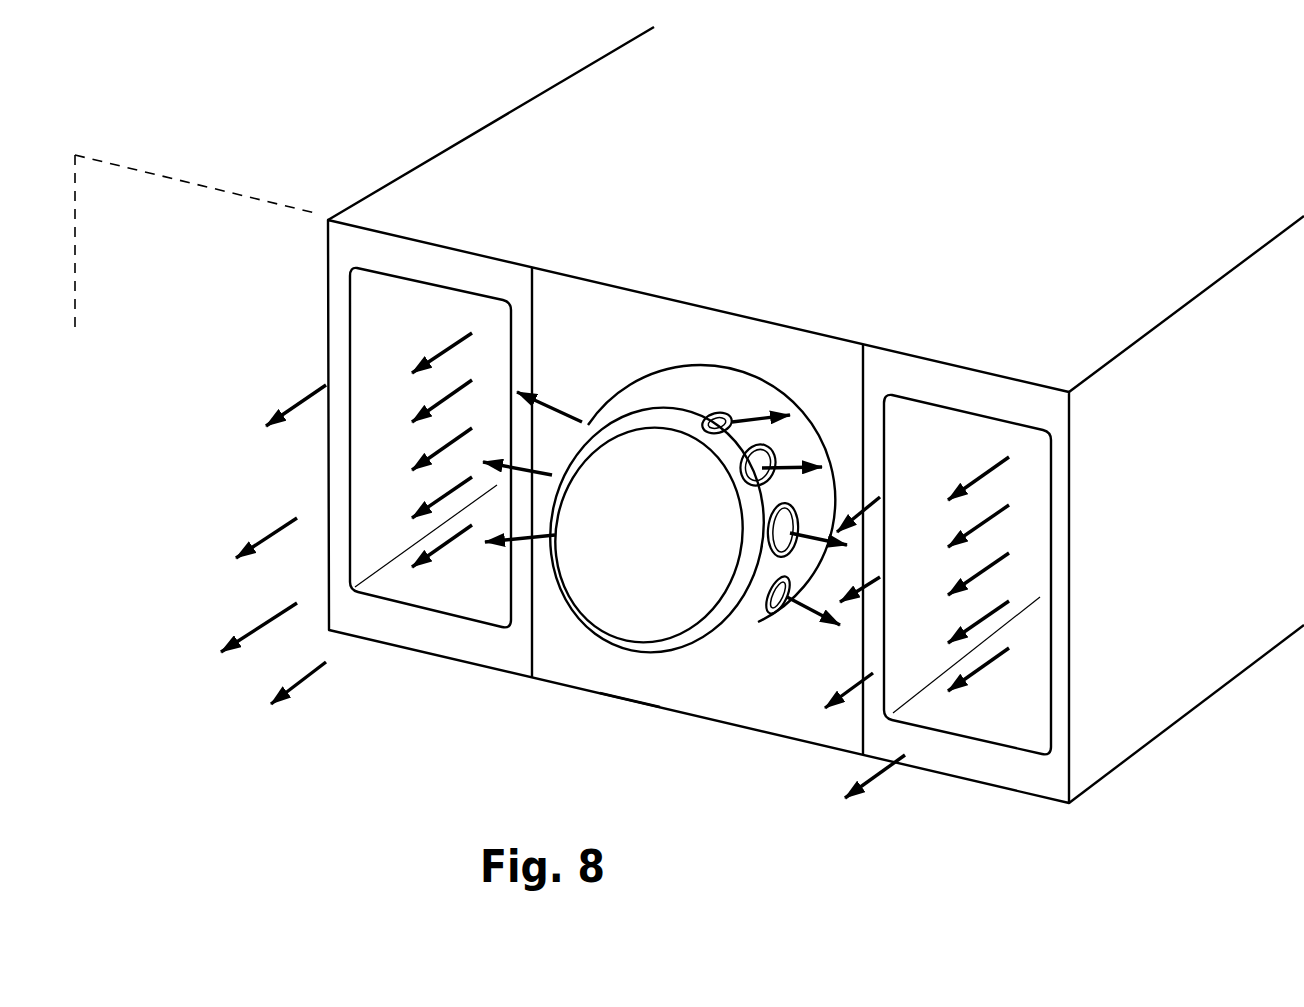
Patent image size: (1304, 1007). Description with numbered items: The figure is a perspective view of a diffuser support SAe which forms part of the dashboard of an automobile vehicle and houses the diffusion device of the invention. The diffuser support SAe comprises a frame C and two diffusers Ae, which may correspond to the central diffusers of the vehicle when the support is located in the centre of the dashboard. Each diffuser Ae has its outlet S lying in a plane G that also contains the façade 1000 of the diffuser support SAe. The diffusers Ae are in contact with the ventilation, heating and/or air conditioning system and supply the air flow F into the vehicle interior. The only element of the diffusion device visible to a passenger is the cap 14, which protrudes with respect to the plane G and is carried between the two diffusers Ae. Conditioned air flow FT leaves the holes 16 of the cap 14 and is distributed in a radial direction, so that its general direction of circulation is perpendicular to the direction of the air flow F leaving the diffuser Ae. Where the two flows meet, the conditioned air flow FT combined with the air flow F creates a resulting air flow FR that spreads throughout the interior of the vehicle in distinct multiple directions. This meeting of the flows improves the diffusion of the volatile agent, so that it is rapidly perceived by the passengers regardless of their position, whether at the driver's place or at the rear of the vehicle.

The façade 1000 is at (343, 250).
The cap 14 is at (713, 650).
The hole 16 is at (703, 425).
The outlet S is at (433, 618).
The frame C is at (618, 700).
The plane G is at (111, 210).
The air flow F is at (710, 512).
The resulting air flow FR is at (561, 582).
The conditioned air flow FT is at (672, 512).
The diffuser Ae is at (505, 362).
The diffuser support SAe is at (276, 476).